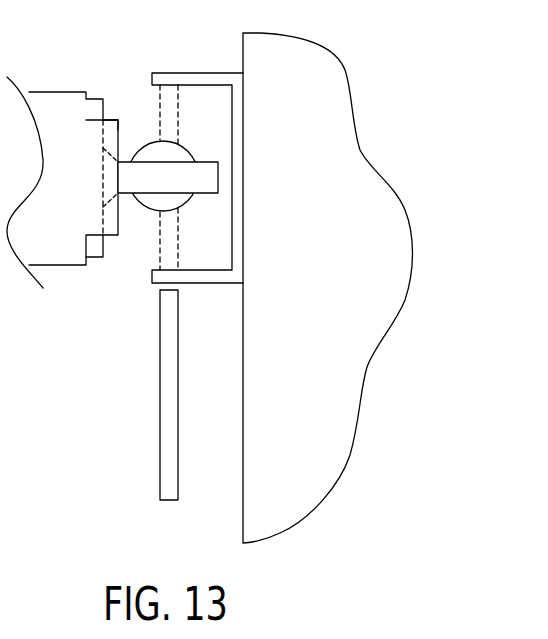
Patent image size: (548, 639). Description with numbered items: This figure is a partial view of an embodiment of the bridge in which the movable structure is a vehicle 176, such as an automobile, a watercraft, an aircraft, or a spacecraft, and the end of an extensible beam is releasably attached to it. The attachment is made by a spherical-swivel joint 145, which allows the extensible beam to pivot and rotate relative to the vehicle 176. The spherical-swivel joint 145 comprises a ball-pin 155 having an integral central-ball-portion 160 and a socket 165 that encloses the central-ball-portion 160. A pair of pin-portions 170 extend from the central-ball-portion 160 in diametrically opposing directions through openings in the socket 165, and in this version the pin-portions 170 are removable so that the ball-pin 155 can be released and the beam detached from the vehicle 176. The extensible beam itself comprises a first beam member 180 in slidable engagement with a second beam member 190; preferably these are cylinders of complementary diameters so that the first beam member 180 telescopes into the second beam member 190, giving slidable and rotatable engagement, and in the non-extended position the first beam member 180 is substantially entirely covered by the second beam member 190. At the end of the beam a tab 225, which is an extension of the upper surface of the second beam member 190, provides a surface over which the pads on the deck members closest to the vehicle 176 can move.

The spherical-swivel joint 145 is at (143, 64).
The ball-pin 155 is at (145, 261).
The central-ball-portion 160 is at (188, 202).
The socket 165 is at (210, 162).
The pin-portion 170 is at (178, 265).
The vehicle 176 is at (332, 267).
The first beam member 180 is at (104, 100).
The second beam member 190 is at (50, 92).
The tab 225 is at (106, 119).